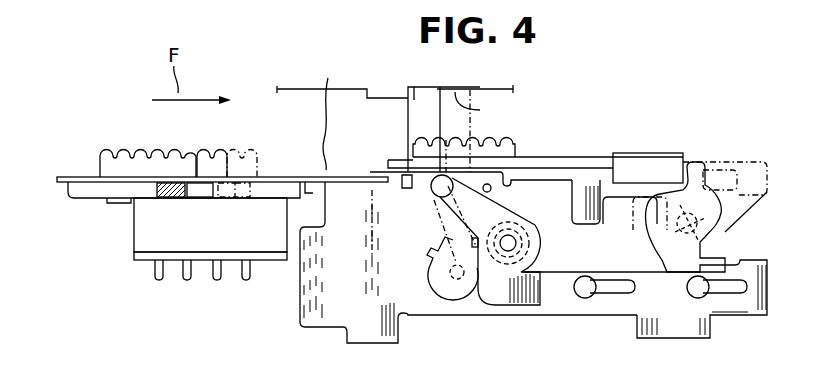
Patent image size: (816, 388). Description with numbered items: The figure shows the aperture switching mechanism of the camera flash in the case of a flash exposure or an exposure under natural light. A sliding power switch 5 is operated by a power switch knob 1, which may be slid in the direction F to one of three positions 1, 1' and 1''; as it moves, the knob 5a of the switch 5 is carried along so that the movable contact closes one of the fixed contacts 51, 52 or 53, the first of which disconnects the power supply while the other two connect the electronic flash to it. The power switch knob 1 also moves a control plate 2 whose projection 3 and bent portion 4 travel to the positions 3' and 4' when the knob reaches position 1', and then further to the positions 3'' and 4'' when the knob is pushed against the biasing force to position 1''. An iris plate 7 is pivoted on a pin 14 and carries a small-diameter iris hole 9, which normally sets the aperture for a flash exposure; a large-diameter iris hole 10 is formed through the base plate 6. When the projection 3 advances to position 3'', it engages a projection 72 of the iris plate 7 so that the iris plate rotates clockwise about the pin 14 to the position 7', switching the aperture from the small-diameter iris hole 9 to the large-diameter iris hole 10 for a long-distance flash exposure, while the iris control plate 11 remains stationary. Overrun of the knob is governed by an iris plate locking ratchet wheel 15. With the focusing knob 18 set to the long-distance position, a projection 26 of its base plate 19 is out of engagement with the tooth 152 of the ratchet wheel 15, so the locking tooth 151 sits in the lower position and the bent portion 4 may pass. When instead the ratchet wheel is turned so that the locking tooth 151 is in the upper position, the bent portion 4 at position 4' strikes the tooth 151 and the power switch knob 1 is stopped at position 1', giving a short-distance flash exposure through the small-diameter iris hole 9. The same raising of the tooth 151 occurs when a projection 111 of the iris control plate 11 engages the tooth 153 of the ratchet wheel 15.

The power switch knob 1 is at (148, 137).
The power switch knob position 1' is at (212, 137).
The power switch knob position 1'' is at (244, 137).
The control plate 2 is at (395, 124).
The projection 3 is at (416, 137).
The projection position 3' is at (403, 114).
The projection position 3'' is at (478, 131).
The projection of iris plate 72 is at (446, 172).
The iris plate 7 is at (484, 177).
The iris plate position 7' is at (434, 268).
The small-diameter iris hole 9 is at (510, 242).
The large-diameter iris hole 10 is at (535, 253).
The pin 14 is at (437, 190).
The focusing knob 18 is at (500, 143).
The base plate 19 is at (612, 157).
The projection 26 is at (649, 168).
The tooth of ratchet wheel 152 is at (690, 170).
The iris plate locking ratchet wheel 15 is at (715, 224).
The bent portion 4 is at (586, 221).
The bent portion position 4' is at (630, 230).
The bent portion position 4'' is at (647, 230).
The power switch 5 is at (134, 234).
The switch knob 5a is at (157, 198).
The fixed contact 51 is at (175, 198).
The fixed contact 52 is at (200, 198).
The fixed contact 53 is at (233, 198).
The base plate 6 is at (301, 316).
The iris control plate 11 is at (557, 297).
The locking tooth of ratchet wheel 151 is at (660, 289).
The tooth of ratchet wheel 153 is at (673, 321).
The projection of control plate 111 is at (722, 283).